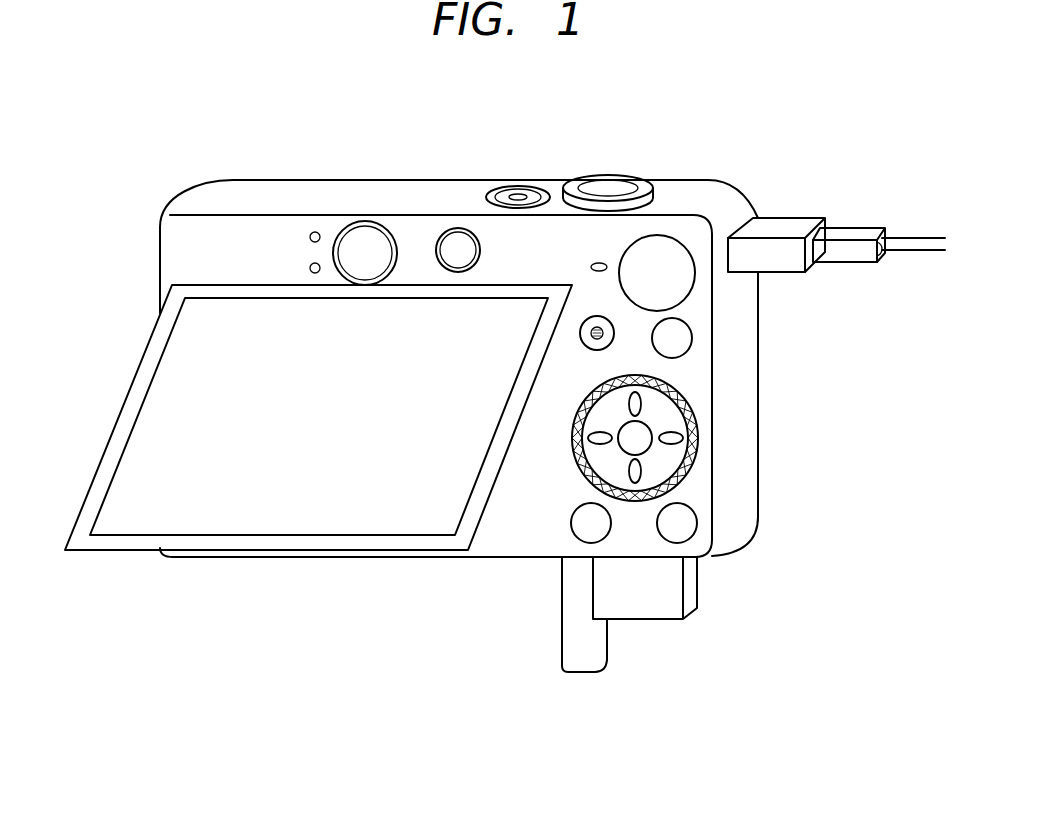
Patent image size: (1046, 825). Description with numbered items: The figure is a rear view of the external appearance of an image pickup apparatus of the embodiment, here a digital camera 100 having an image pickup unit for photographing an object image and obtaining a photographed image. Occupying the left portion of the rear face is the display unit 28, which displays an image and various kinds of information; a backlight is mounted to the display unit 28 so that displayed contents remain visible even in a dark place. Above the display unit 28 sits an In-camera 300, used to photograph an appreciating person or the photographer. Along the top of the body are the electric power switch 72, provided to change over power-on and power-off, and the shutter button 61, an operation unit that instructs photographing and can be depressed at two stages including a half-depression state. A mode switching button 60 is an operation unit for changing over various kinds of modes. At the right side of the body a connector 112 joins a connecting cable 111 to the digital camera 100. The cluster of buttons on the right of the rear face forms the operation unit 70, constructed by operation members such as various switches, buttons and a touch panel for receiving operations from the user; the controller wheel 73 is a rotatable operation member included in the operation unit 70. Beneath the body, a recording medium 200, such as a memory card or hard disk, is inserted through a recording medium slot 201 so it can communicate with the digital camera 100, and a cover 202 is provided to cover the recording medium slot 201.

The digital camera 100 is at (288, 633).
The display unit 28 is at (276, 333).
The In-camera 300 is at (458, 243).
The electric power switch 72 is at (518, 194).
The shutter button 61 is at (609, 187).
The mode switching button 60 is at (667, 260).
The connector 112 is at (752, 218).
The connecting cable 111 is at (848, 232).
The operation unit 70 is at (620, 212).
The controller wheel 73 is at (580, 467).
The recording medium 200 is at (642, 592).
The recording medium slot 201 is at (610, 560).
The cover 202 is at (608, 652).